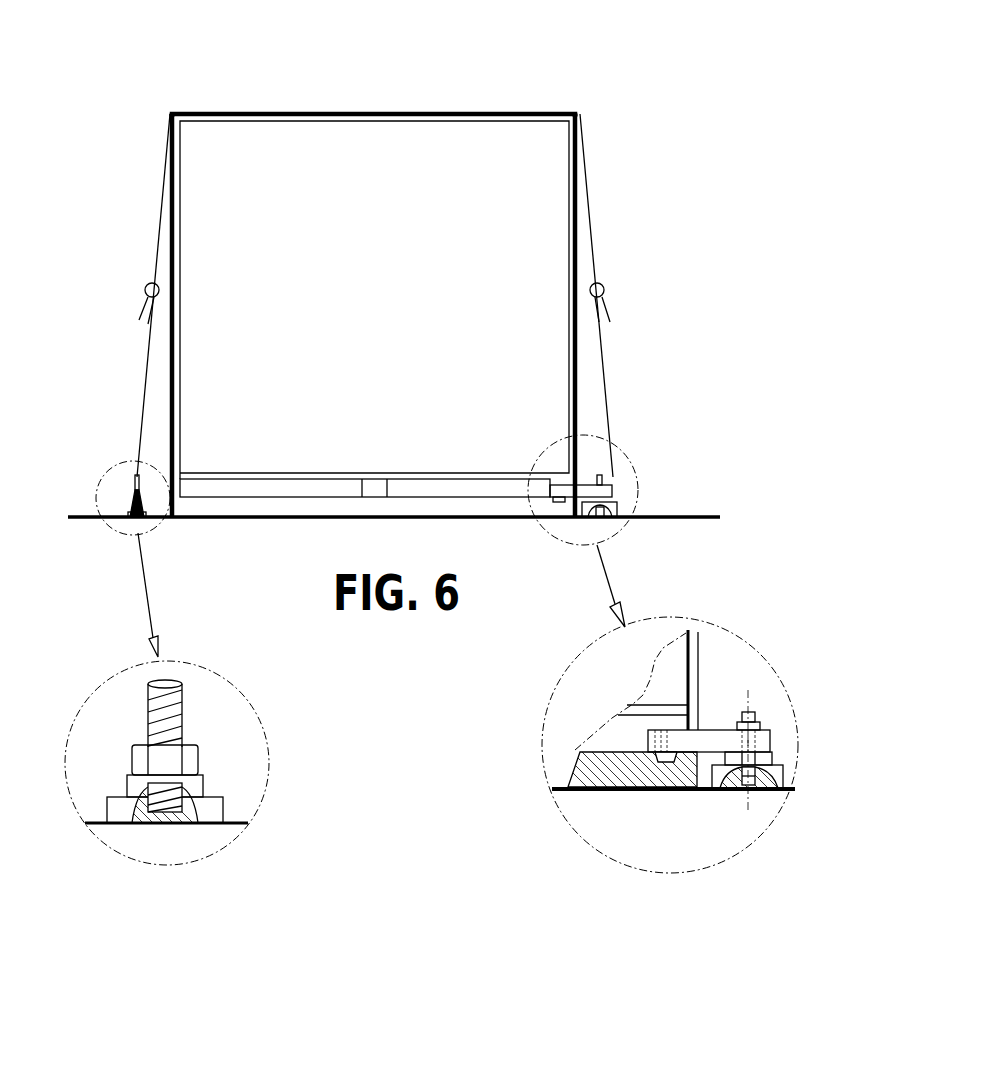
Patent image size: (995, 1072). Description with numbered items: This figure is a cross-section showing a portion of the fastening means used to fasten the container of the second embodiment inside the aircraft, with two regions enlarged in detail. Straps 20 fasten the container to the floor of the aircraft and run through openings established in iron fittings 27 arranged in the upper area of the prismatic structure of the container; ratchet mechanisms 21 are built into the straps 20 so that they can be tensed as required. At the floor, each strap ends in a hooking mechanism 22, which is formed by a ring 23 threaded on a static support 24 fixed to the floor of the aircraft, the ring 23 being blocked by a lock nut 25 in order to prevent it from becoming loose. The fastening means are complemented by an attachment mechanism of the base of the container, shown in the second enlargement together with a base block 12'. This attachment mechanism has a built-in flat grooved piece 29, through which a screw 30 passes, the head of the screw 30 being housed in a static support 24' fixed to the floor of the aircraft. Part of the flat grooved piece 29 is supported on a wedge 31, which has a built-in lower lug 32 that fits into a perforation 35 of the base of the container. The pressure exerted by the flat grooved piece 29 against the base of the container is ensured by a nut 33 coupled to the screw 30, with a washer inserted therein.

The straps 20 is at (598, 240).
The ratchet mechanisms 21 is at (605, 289).
The hooking mechanisms 22 is at (128, 470).
The iron fittings 27 is at (165, 96).
The ring 23 is at (175, 712).
The lock nut 25 is at (188, 762).
The static support 24 is at (131, 824).
The base block 12' is at (610, 770).
The perforation 35 is at (668, 754).
The lower lug 32 is at (663, 760).
The flat grooved piece 29 is at (772, 740).
The nut 33 is at (757, 718).
The wedge 31 is at (774, 760).
The static support 24' is at (792, 795).
The screw 30 is at (750, 790).